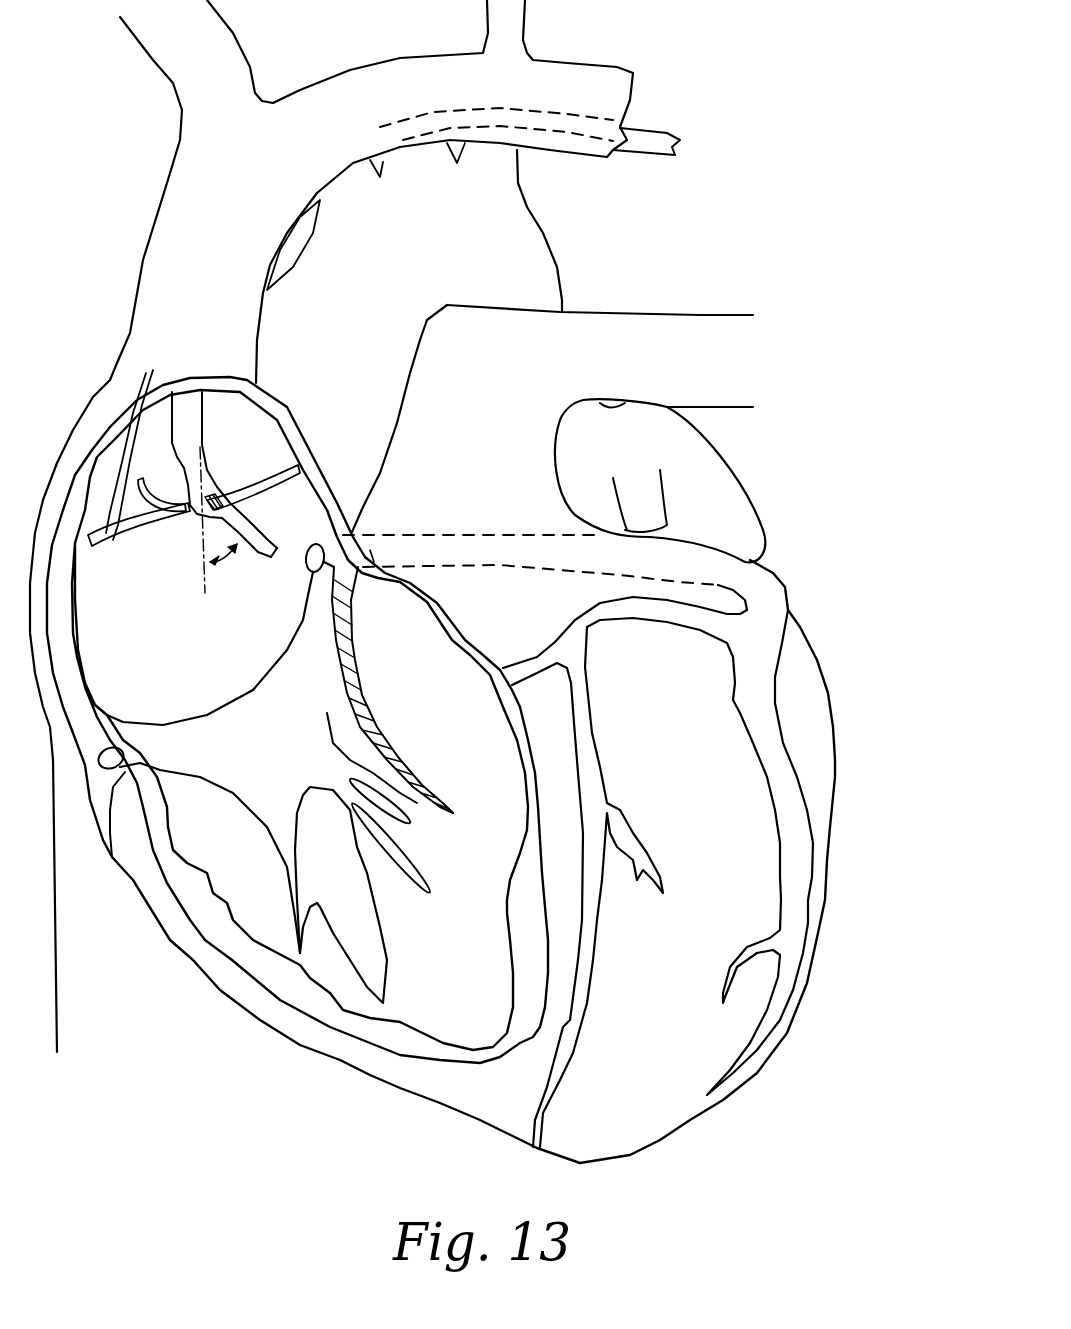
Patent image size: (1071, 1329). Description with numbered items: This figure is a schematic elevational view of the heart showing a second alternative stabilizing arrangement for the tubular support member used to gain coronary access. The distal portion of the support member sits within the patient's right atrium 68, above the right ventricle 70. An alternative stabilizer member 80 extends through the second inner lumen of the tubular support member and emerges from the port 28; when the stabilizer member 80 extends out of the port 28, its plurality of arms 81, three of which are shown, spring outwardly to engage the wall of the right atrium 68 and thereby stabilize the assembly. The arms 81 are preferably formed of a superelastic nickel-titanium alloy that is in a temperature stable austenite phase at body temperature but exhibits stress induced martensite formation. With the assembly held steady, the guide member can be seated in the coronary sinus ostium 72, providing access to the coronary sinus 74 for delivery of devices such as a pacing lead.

The port 28 is at (207, 497).
The right atrium 68 is at (196, 665).
The right ventricle 70 is at (376, 892).
The coronary sinus ostium 72 is at (293, 585).
The coronary sinus 74 is at (530, 531).
The stabilizer member 80 is at (188, 520).
The arms 81 is at (229, 440).